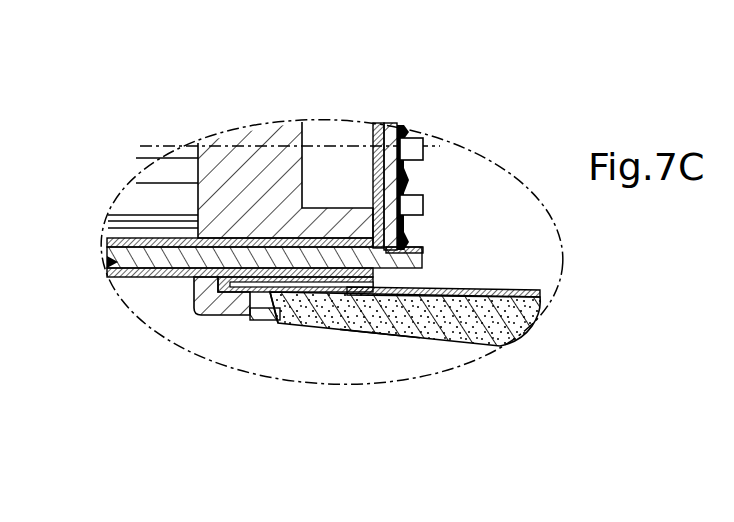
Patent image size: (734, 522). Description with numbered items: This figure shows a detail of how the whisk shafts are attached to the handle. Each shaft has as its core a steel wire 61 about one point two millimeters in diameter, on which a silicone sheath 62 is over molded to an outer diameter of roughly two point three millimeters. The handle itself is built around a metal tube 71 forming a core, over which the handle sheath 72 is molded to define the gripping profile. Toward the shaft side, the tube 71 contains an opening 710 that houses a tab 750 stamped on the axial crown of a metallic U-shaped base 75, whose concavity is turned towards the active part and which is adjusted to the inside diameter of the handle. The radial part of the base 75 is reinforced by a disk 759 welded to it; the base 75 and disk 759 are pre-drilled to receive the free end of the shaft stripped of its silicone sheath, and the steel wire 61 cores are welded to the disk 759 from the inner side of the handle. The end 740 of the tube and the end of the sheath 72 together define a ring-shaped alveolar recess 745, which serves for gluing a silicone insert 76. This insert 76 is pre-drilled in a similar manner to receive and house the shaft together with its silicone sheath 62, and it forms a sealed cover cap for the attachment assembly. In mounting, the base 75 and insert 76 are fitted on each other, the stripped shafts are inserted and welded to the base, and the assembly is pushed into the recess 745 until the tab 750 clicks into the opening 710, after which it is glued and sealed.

The silicone insert 76 is at (226, 157).
The U-shaped base 75 is at (384, 125).
The disk 759 is at (393, 128).
The steel wire 61 is at (110, 250).
The silicone sheath 62 is at (123, 273).
The metal tube 71 is at (540, 292).
The sheath 72 is at (532, 328).
The end of the tube 740 is at (227, 315).
The ring-shaped alveolar recess 745 is at (272, 322).
The tab 750 is at (300, 327).
The opening 710 is at (377, 330).